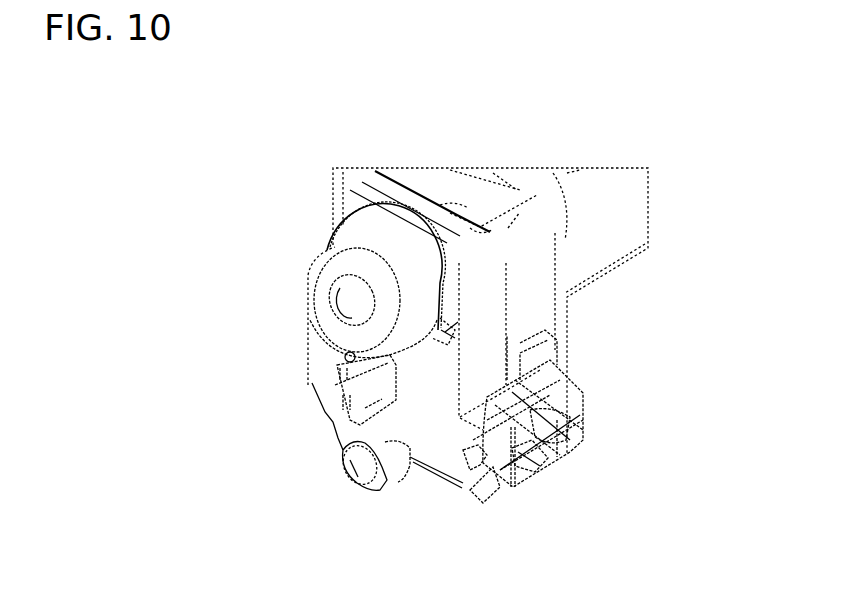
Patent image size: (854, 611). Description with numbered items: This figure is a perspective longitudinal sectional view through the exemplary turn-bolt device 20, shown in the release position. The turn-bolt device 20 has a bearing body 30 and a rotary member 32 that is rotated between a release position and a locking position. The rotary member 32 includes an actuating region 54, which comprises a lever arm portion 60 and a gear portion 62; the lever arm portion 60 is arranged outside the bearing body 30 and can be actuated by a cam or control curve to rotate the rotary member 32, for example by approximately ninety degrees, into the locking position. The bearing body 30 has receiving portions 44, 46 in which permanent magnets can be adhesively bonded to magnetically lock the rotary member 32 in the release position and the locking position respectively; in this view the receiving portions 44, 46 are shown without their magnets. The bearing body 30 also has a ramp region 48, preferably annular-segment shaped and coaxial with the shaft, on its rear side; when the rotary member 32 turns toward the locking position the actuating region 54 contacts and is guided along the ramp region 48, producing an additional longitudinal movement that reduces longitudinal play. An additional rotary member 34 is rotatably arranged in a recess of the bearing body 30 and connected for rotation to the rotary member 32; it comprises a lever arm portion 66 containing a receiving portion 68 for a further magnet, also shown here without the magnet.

The turn-bolt device 20 is at (478, 73).
The bearing body 30 is at (345, 187).
The gear portion 62 is at (412, 174).
The ramp region 48 is at (450, 331).
The actuating region 54 is at (283, 264).
The rotary member 32 is at (268, 330).
The lever arm portion 60 is at (313, 386).
The receiving portion 46 is at (352, 463).
The receiving portion 44 is at (480, 465).
The additional rotary member 34 is at (565, 402).
The lever arm portion 66 is at (538, 423).
The receiving portion 68 is at (520, 463).